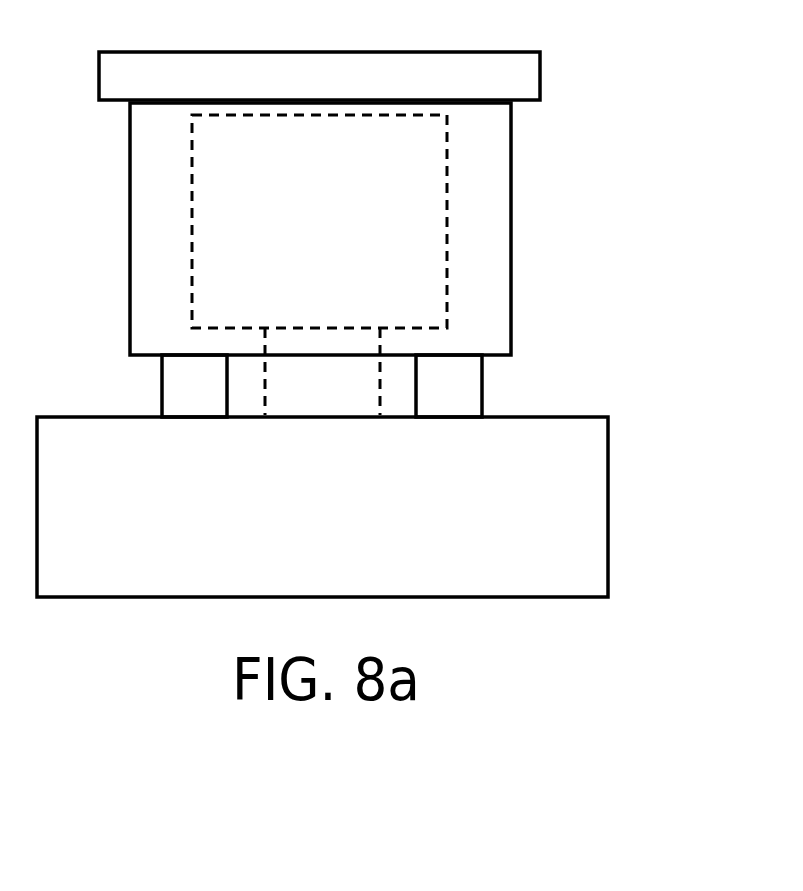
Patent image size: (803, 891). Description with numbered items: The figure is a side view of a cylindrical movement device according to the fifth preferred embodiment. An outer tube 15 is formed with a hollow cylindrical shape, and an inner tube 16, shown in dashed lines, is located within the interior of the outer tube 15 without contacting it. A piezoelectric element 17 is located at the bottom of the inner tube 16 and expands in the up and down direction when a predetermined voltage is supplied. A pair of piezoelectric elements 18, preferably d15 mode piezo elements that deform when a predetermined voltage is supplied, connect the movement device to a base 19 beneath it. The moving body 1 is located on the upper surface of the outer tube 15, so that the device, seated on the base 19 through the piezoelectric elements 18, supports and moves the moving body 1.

The moving body 1 is at (472, 65).
The outer tube 15 is at (495, 223).
The inner tube 16 is at (225, 207).
The piezoelectric element 17 is at (365, 400).
The piezoelectric elements 18 is at (435, 373).
The base 19 is at (595, 525).